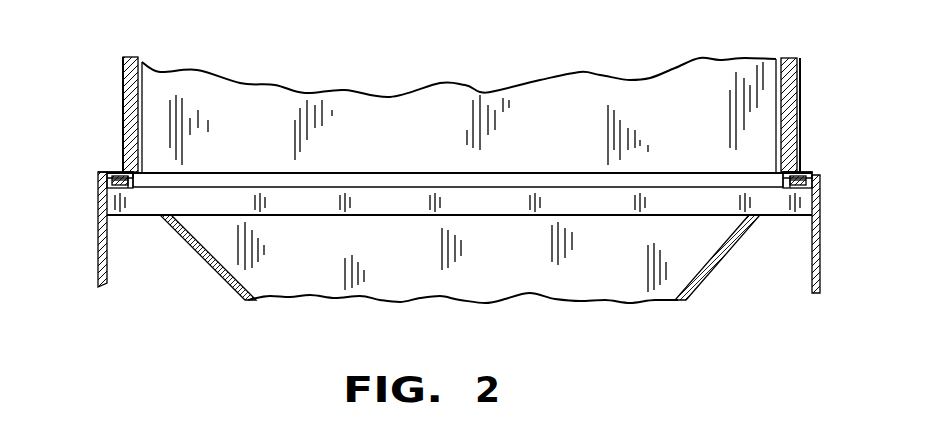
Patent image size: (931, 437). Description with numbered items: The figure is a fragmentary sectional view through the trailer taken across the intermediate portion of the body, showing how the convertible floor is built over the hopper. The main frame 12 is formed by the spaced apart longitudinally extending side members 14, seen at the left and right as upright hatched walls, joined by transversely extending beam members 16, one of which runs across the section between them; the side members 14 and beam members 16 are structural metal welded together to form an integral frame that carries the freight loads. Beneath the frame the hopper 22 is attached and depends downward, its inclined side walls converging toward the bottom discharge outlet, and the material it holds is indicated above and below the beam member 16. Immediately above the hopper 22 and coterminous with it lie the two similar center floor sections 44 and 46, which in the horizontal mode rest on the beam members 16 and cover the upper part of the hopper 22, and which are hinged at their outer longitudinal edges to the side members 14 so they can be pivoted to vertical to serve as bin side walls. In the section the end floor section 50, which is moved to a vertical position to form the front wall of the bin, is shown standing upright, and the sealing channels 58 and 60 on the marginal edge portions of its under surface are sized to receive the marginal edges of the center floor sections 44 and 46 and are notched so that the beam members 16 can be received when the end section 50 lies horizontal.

The main frame 12 is at (820, 247).
The side member 14 is at (98, 243).
The transverse beam member 16 is at (405, 210).
The hopper 22 is at (530, 292).
The floor section 44 is at (787, 58).
The floor section 46 is at (132, 57).
The floor section 50 is at (398, 140).
The sealing channel 58 is at (797, 70).
The sealing channel 60 is at (123, 60).